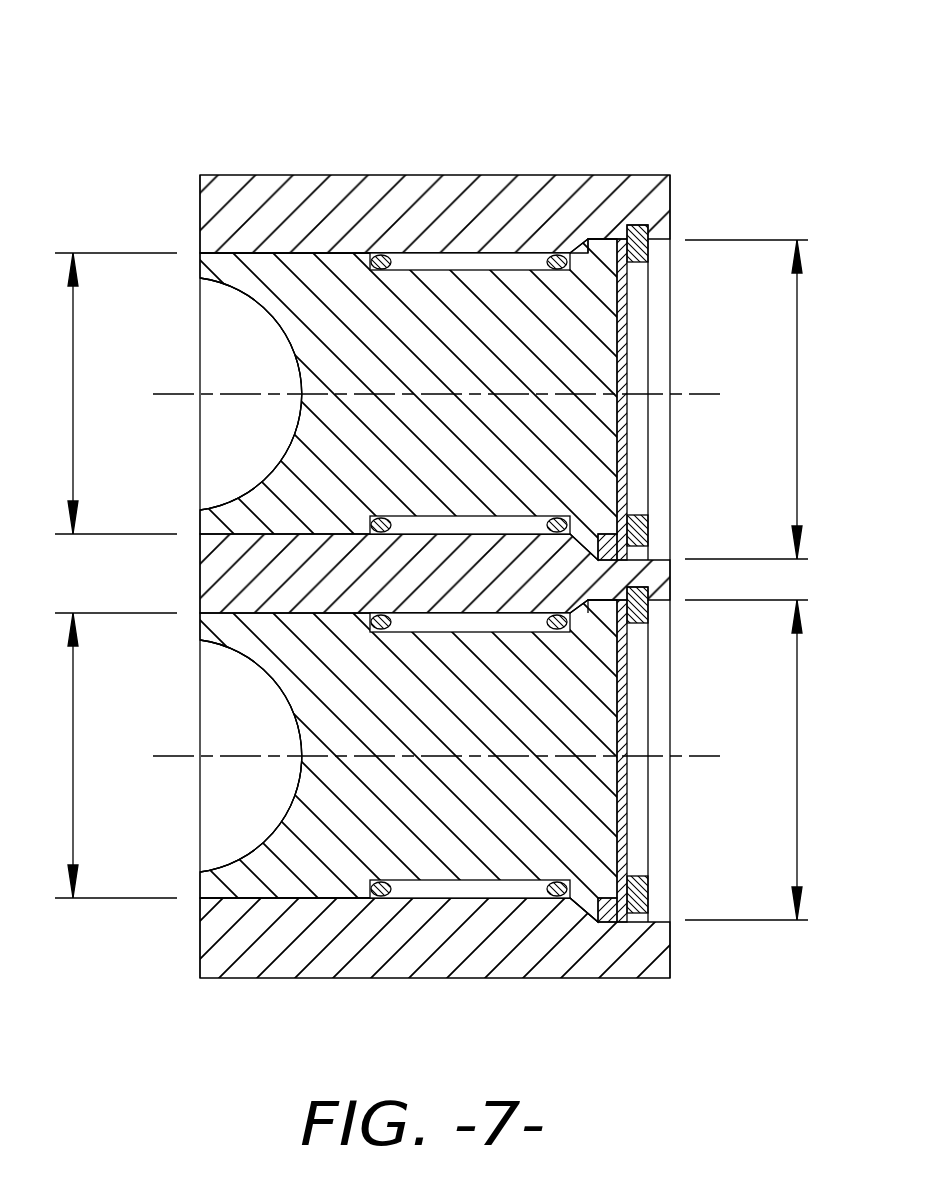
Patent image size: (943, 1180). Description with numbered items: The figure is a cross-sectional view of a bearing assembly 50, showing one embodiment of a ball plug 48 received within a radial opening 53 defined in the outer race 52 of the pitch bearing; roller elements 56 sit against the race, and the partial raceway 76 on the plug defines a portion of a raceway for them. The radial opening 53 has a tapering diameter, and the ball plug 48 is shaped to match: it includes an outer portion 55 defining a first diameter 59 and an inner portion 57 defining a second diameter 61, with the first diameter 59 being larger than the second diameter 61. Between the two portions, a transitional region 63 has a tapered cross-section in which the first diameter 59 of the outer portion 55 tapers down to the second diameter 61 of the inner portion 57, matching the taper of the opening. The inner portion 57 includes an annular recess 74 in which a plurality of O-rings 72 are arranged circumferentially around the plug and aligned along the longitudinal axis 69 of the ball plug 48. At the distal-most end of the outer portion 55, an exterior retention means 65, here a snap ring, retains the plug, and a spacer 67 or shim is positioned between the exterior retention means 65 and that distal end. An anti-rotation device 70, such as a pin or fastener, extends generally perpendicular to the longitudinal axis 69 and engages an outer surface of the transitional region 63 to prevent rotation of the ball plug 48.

The bearing assembly 50 is at (435, 533).
The outer race 52 is at (228, 195).
The radial opening 53 is at (232, 560).
The outer portion 55 is at (598, 238).
The roller elements 56 is at (217, 478).
The inner portion 57 is at (262, 252).
The first diameter 59 is at (798, 385).
The second diameter 61 is at (72, 392).
The transitional region 63 is at (587, 248).
The exterior retention means 65 is at (637, 225).
The spacer 67 is at (630, 487).
The longitudinal axis 69 is at (688, 394).
The anti-rotation device 70 is at (640, 546).
The O-rings 72 is at (374, 250).
The annular recess 74 is at (430, 253).
The partial raceway 76 is at (273, 480).
The ball plug 48 is at (358, 328).